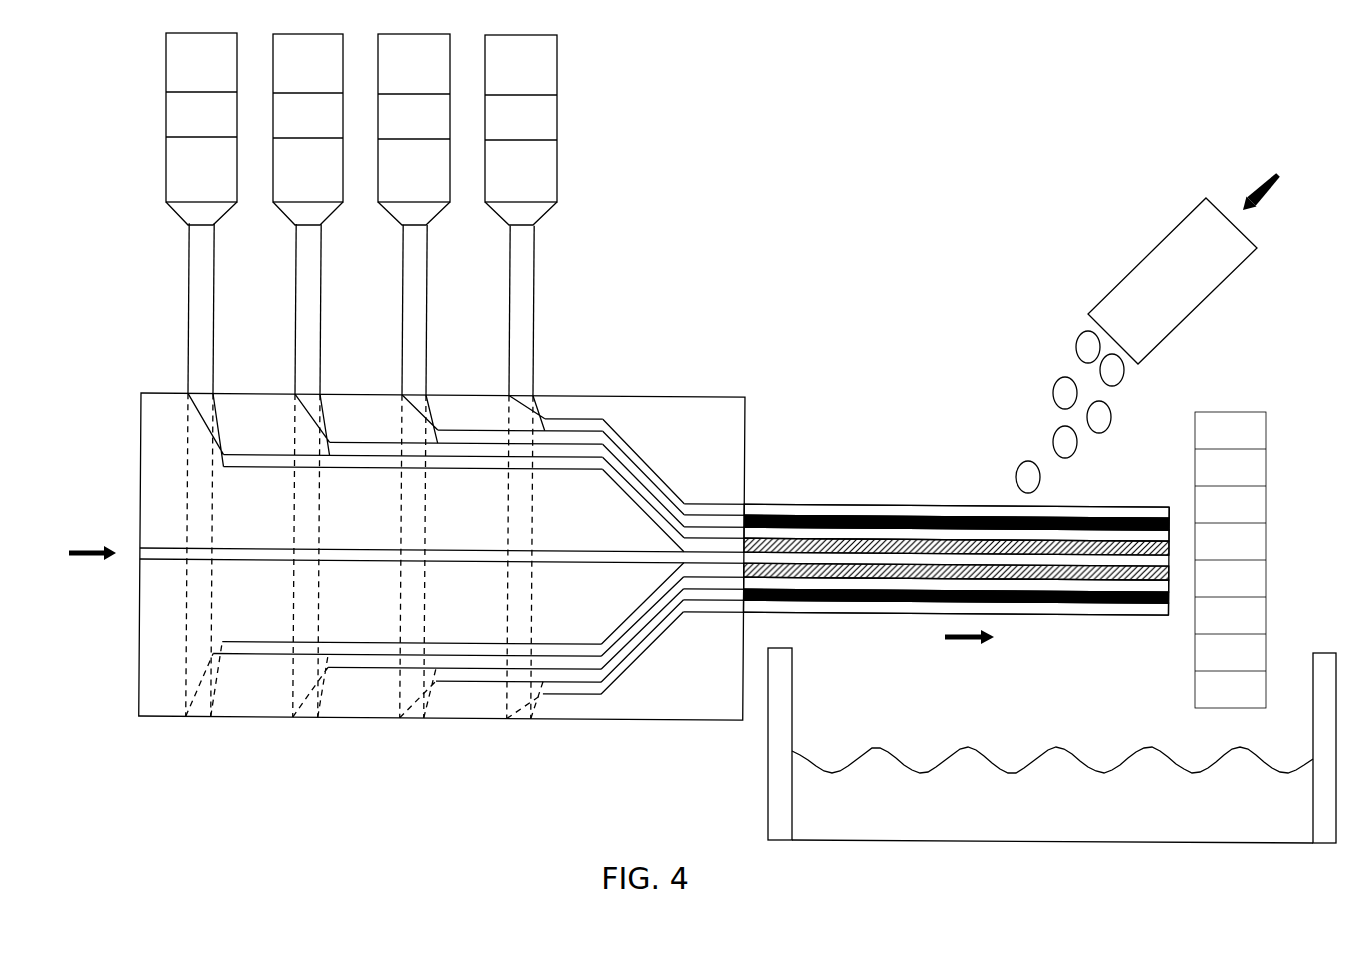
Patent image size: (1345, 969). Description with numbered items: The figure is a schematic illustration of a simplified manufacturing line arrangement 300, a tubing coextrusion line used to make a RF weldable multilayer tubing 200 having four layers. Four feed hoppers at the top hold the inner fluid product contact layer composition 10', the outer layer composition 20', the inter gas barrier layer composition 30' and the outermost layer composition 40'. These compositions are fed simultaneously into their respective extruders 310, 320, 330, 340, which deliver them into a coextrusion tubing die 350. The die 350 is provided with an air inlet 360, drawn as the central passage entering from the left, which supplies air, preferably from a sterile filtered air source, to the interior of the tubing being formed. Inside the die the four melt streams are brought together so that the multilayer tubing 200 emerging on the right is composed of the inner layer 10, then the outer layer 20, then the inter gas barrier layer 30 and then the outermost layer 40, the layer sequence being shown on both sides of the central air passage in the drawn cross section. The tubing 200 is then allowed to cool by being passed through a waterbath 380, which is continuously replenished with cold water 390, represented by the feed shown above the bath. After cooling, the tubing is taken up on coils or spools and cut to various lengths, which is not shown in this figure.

The inner fluid product contact layer composition 10' is at (201, 129).
The outer layer composition 20' is at (308, 129).
The inter gas barrier layer composition 30' is at (414, 129).
The outermost layer composition 40' is at (521, 130).
The inner layer 10 is at (994, 560).
The outer layer 20 is at (994, 560).
The inter gas barrier layer 30 is at (994, 560).
The outermost layer 40 is at (994, 560).
The multilayer tubing 200 is at (815, 503).
The manufacturing line arrangement 300 is at (786, 216).
The extruder 310 is at (200, 308).
The extruder 320 is at (307, 308).
The extruder 330 is at (415, 308).
The extruder 340 is at (521, 308).
The coextrusion tubing die 350 is at (686, 395).
The air inlet 360 is at (165, 560).
The waterbath 380 is at (1015, 817).
The cold water 390 is at (1158, 268).